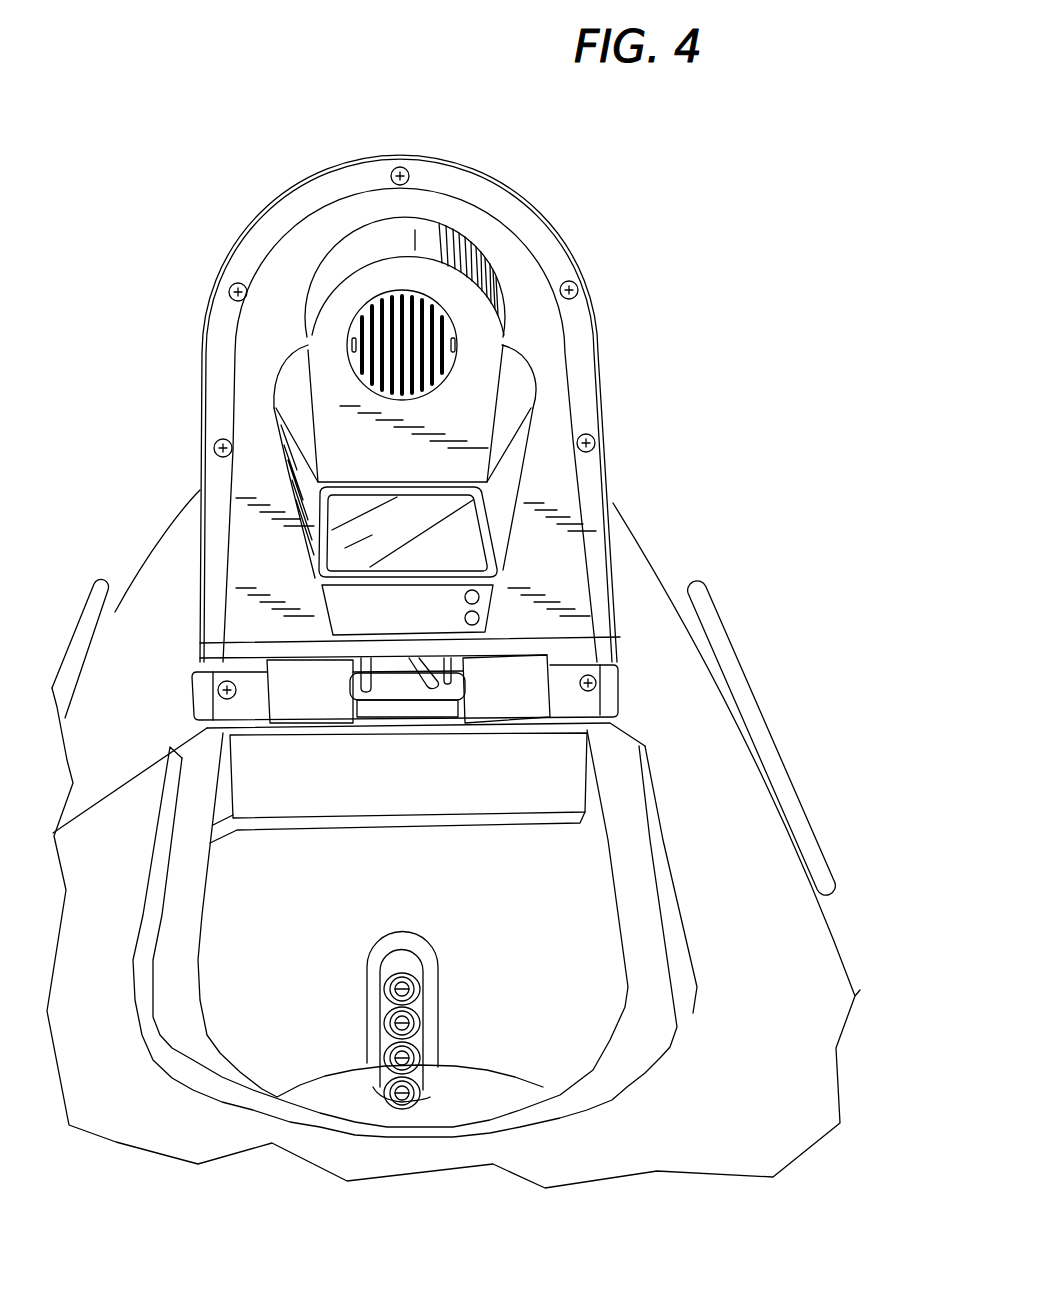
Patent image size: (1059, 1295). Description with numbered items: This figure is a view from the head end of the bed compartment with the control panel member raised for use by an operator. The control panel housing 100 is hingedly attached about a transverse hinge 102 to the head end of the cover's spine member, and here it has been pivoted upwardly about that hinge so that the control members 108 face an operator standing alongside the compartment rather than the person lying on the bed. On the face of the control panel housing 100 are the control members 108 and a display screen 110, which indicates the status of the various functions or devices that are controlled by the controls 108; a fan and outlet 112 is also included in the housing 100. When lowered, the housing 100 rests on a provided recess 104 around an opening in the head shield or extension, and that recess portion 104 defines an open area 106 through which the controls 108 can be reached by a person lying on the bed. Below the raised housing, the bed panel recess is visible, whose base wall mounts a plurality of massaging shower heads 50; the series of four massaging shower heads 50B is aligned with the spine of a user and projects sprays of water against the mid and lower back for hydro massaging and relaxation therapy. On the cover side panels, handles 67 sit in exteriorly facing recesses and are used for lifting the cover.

The control panel housing 100 is at (542, 352).
The fan and outlet 112 is at (407, 300).
The display screen 110 is at (457, 525).
The control members 108 is at (490, 600).
The transverse hinge 102 is at (617, 680).
The open area 106 is at (568, 863).
The recess 104 is at (652, 1015).
The handles 67 is at (96, 605).
The massaging shower heads 50 is at (406, 973).
The massaging shower heads aligned with the spine 50B is at (393, 1020).